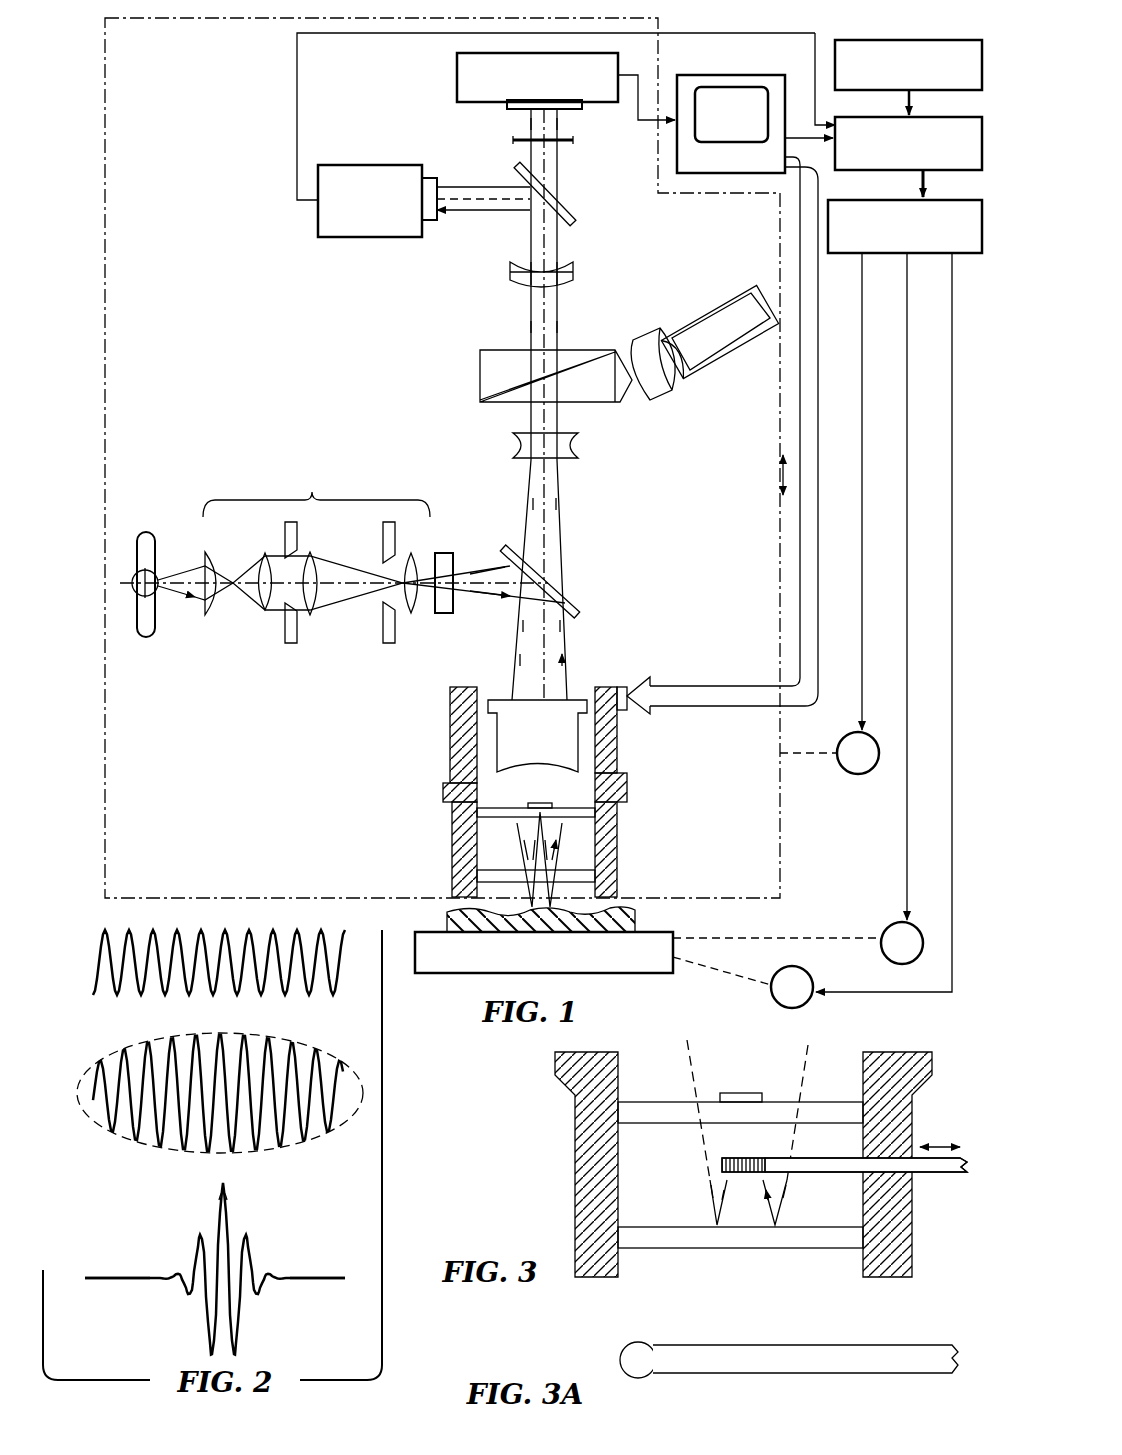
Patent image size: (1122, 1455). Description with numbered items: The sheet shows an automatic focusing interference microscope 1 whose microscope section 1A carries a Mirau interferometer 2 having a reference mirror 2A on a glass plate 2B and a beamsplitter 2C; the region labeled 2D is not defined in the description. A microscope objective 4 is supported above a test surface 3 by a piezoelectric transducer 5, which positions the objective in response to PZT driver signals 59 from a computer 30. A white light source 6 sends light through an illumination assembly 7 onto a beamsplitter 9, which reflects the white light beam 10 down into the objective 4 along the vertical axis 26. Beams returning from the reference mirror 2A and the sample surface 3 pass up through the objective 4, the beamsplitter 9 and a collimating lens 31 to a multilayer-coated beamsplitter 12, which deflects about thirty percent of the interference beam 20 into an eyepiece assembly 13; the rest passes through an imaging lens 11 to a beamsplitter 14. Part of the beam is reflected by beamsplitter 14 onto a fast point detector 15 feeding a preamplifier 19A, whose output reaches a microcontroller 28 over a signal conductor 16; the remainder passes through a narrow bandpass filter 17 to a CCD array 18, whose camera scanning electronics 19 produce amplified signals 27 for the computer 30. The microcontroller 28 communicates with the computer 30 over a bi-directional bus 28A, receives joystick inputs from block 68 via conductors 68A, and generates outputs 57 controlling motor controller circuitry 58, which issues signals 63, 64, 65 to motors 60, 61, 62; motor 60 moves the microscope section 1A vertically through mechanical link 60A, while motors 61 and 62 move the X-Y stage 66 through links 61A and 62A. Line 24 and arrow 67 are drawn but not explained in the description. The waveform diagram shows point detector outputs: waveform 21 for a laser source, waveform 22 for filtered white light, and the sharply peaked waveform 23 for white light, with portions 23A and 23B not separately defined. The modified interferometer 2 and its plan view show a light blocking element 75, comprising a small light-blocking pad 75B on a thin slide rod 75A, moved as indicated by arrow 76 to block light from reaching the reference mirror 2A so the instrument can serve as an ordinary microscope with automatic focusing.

In FIG. 1, the automatic focusing interference microscope 1 is at (98, 108).
In FIG. 1, the microscope section 1A is at (103, 860).
In FIG. 1, the Mirau interferometer 2 is at (682, 826).
In FIG. 3, the Mirau interferometer 2 is at (563, 1110).
In FIG. 1, the reference mirror 2A is at (553, 790).
In FIG. 3, the reference mirror 2A is at (736, 1092).
In FIG. 1, the glass plate 2B is at (596, 812).
In FIG. 3, the glass plate 2B is at (825, 1104).
In FIG. 1, the beamsplitter 2C is at (600, 866).
In FIG. 3, the beamsplitter 2C is at (797, 1241).
In FIG. 1, the gap between plates 2D is at (610, 838).
In FIG. 1, the test surface 3 is at (630, 906).
In FIG. 1, the microscope objective 4 is at (593, 762).
In FIG. 1, the piezoelectric transducer 5 is at (452, 724).
In FIG. 1, the light source 6 is at (148, 640).
In FIG. 1, the illumination assembly 7 is at (312, 492).
In FIG. 1, the beamsplitter 9 is at (578, 614).
In FIG. 1, the white light beam 10 is at (558, 532).
In FIG. 1, the imaging lens 11 is at (575, 276).
In FIG. 1, the multilayer-coated beamsplitter 12 is at (490, 350).
In FIG. 1, the eyepiece assembly 13 is at (673, 390).
In FIG. 1, the beamsplitter 14 is at (576, 218).
In FIG. 1, the point detector 15 is at (435, 224).
In FIG. 1, the signal conductor 16 is at (297, 150).
In FIG. 1, the narrow bandpass filter 17 is at (560, 144).
In FIG. 1, the CCD array 18 is at (582, 108).
In FIG. 1, the camera scanning electronics 19 is at (618, 58).
In FIG. 1, the preamplifier 19A is at (380, 166).
In FIG. 1, the interference beam 20 is at (530, 282).
In FIG. 2, the waveform 21 is at (93, 968).
In FIG. 2, the waveform 22 is at (92, 1094).
In FIG. 2, the waveform 23 is at (98, 1274).
In FIG. 2, the signal peak 23A is at (228, 1185).
In FIG. 2, the signal baseline 23B is at (112, 1278).
In FIG. 1, the signal line to microcontroller 24 is at (815, 33).
In FIG. 1, the vertical axis 26 is at (548, 478).
In FIG. 1, the amplified signals 27 is at (638, 113).
In FIG. 1, the microcontroller 28 is at (886, 115).
In FIG. 1, the bi-directional bus 28A is at (800, 185).
In FIG. 1, the computer 30 is at (746, 76).
In FIG. 1, the collimating lens 31 is at (580, 447).
In FIG. 1, the outputs 57 is at (905, 180).
In FIG. 1, the motor controller circuitry 58 is at (934, 192).
In FIG. 1, the PZT driver signals 59 is at (818, 482).
In FIG. 1, the motor 60 is at (858, 775).
In FIG. 1, the mechanical link 60A is at (800, 755).
In FIG. 1, the motor 61 is at (884, 926).
In FIG. 1, the mechanical link 61A is at (797, 926).
In FIG. 1, the motor 62 is at (812, 975).
In FIG. 1, the mechanical link 62A is at (771, 983).
In FIG. 1, the signal 63 is at (862, 318).
In FIG. 1, the signal 64 is at (907, 318).
In FIG. 1, the signal 65 is at (952, 318).
In FIG. 1, the X-Y stage 66 is at (428, 946).
In FIG. 1, the vertical movement 67 is at (782, 478).
In FIG. 1, the joystick controller block 68 is at (930, 40).
In FIG. 1, the conductors 68A is at (914, 98).
In FIG. 3, the reference mirror light blocking element 75 is at (912, 1174).
In FIG. 3, the slide rod 75A is at (919, 1176).
In FIG. 3A, the slide rod 75A is at (823, 1362).
In FIG. 3, the light-blocking pad 75B is at (762, 1158).
In FIG. 3A, the light-blocking pad 75B is at (648, 1352).
In FIG. 3, the arrow 76 is at (940, 1146).